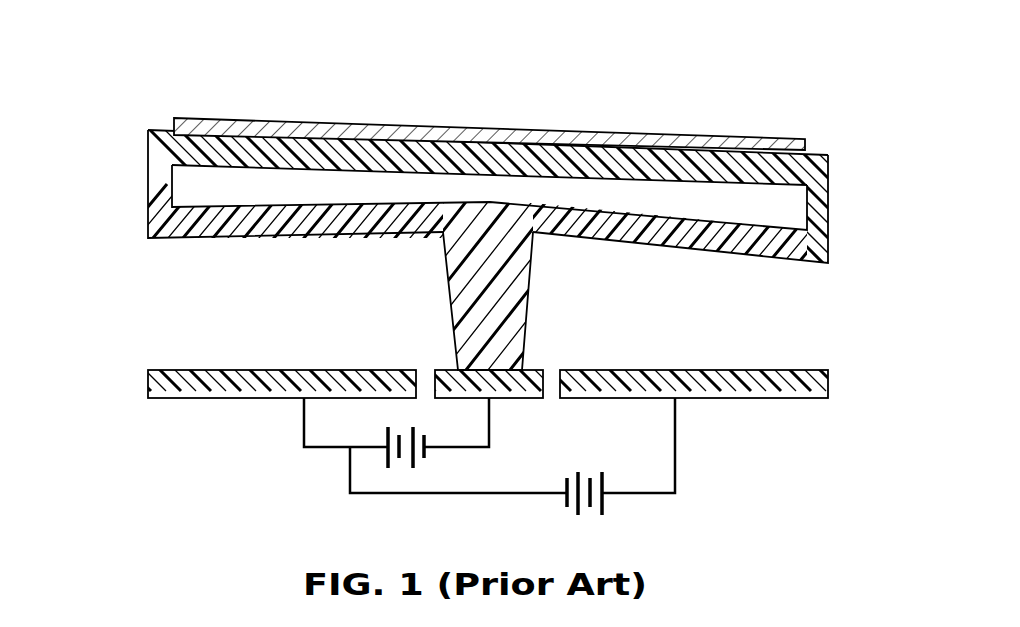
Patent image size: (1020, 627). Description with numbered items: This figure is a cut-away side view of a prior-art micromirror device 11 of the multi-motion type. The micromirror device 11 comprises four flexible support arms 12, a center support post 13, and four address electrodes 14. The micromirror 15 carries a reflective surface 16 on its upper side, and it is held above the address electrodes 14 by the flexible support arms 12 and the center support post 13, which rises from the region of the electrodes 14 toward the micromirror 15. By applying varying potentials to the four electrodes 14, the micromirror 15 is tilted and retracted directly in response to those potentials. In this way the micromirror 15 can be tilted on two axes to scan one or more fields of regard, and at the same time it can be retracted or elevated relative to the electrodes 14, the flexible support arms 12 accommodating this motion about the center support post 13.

The micromirror device 11 is at (136, 97).
The flexible support arm 12 is at (180, 224).
The center support post 13 is at (463, 331).
The address electrode 14 is at (177, 383).
The micromirror 15 is at (803, 175).
The reflective surface 16 is at (775, 140).